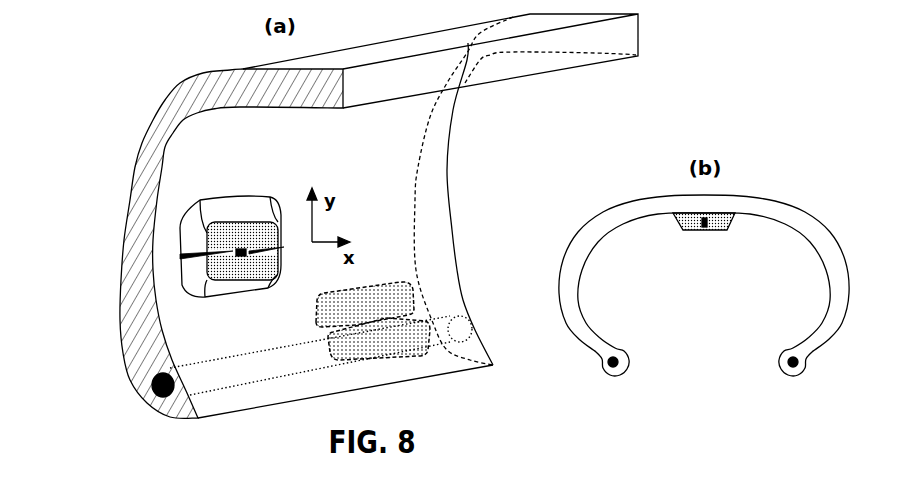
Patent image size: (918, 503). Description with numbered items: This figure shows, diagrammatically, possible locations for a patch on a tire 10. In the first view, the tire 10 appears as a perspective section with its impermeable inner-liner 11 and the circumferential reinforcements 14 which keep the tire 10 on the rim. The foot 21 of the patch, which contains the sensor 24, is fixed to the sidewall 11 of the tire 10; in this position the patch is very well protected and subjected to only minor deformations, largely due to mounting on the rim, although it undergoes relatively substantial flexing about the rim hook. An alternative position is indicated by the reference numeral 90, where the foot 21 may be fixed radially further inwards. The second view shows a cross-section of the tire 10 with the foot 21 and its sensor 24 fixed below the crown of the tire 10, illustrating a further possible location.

The tire 10 is at (143, 96).
The inner-liner 11 is at (390, 180).
The circumferential reinforcements 14 is at (151, 383).
The foot 21 is at (243, 287).
The sensor 24 is at (247, 257).
The position radially further inwards 90 is at (367, 320).